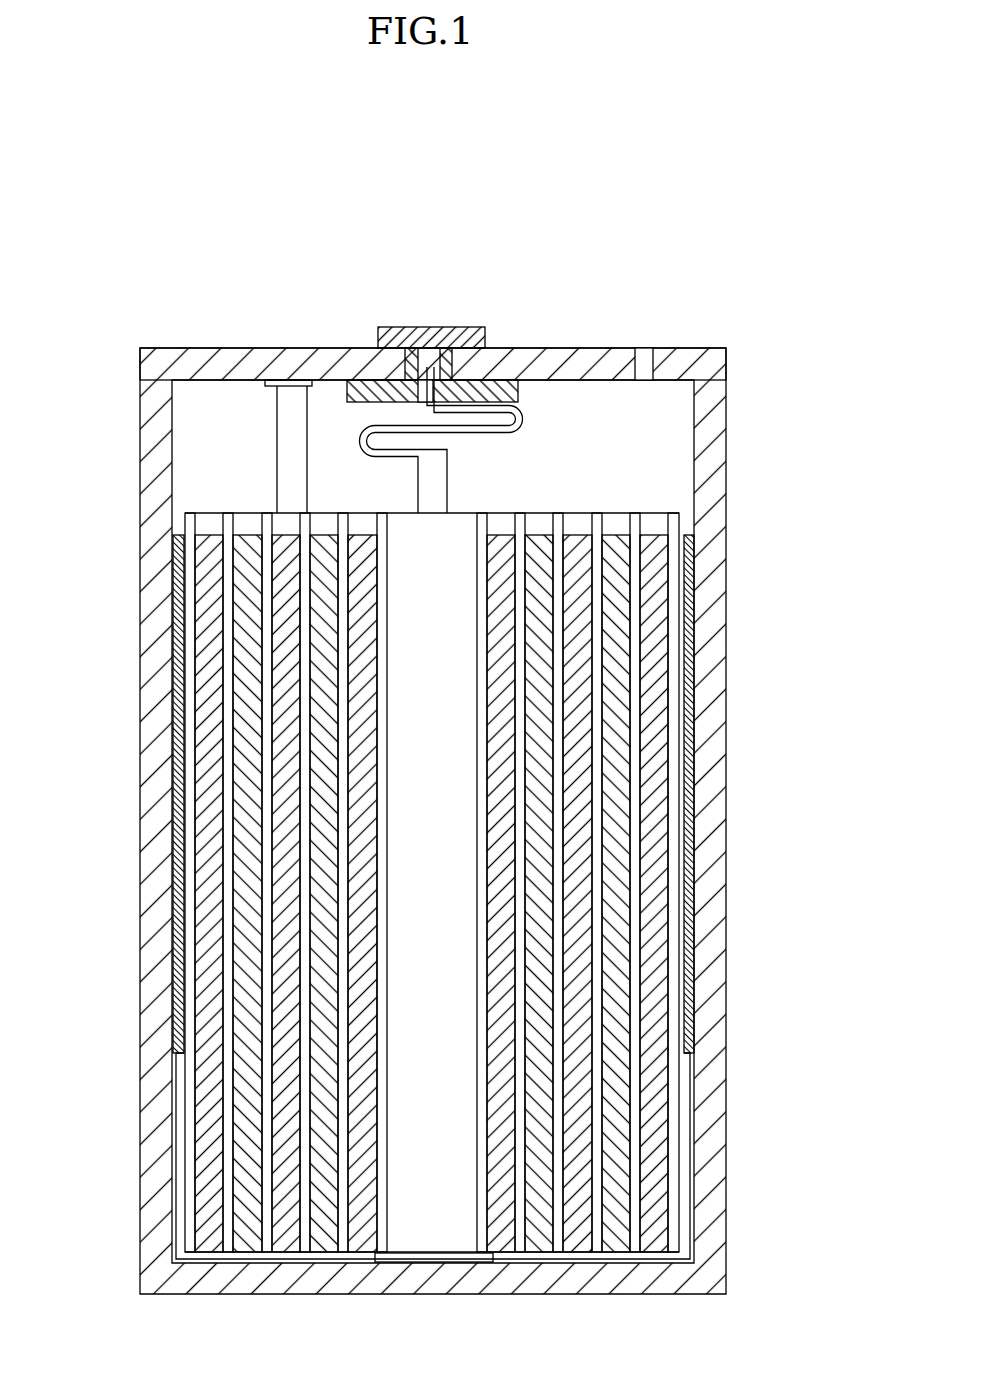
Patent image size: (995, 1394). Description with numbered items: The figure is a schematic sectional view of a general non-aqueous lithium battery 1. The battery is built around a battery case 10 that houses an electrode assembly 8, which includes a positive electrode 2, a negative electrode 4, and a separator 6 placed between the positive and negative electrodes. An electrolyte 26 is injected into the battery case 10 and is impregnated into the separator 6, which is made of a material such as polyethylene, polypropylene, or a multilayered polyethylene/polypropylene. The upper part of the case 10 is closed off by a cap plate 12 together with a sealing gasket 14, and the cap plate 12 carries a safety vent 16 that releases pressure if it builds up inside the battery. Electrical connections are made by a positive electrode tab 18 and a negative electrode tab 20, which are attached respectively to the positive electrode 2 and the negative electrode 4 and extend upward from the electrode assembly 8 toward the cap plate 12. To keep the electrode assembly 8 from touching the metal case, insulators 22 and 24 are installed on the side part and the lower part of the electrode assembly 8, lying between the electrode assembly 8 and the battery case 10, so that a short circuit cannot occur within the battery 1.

The lithium battery 1 is at (800, 260).
The positive electrode 2 is at (657, 1083).
The negative electrode 4 is at (273, 1083).
The separator 6 is at (230, 1183).
The electrode assembly 8 is at (595, 502).
The battery case 10 is at (147, 483).
The cap plate 12 is at (548, 356).
The sealing gasket 14 is at (380, 328).
The safety vent 16 is at (640, 356).
The positive electrode tab 18 is at (283, 392).
The negative electrode tab 20 is at (430, 360).
The insulator 22 is at (178, 772).
The insulator 24 is at (365, 1264).
The electrolyte 26 is at (617, 1149).